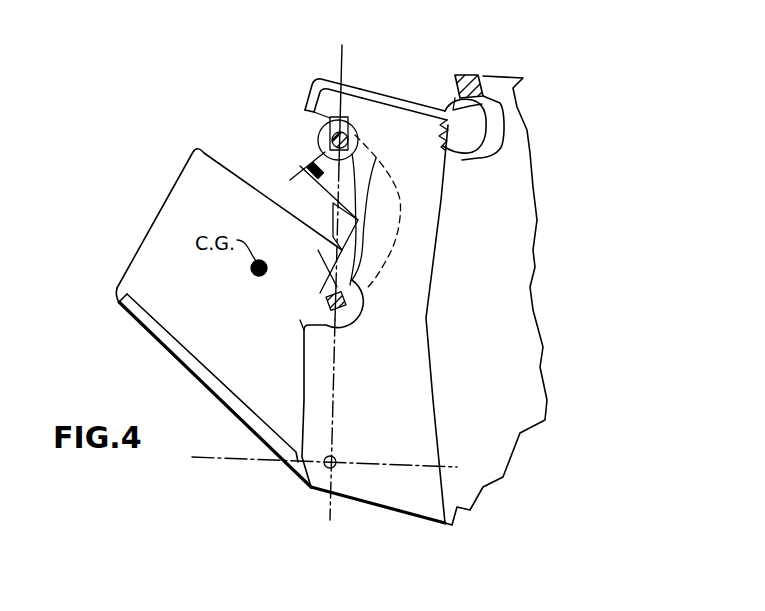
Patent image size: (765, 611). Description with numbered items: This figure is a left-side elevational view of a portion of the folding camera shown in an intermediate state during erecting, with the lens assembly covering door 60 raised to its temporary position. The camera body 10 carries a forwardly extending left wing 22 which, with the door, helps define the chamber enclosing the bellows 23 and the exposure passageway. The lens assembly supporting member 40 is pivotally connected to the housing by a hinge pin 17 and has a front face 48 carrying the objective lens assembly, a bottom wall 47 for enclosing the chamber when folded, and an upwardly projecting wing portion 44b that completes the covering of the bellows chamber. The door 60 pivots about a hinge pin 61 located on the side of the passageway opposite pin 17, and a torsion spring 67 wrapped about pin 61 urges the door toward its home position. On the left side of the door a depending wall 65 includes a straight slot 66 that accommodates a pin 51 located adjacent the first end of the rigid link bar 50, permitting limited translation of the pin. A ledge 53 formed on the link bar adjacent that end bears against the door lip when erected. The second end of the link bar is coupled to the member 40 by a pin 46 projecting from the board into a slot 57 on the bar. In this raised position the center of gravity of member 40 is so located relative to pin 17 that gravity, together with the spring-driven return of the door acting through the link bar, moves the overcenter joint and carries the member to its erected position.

The vehicle body wall 10 is at (507, 60).
The lens assembly covering door 60 is at (306, 72).
The wall 65 is at (415, 112).
The slot 66 is at (323, 130).
The pin 51 is at (330, 138).
The ledge 53 is at (320, 160).
The link bar 50 is at (312, 169).
The bellows 23 is at (311, 208).
The front face 48 is at (143, 237).
The lens assembly supporting member 40 is at (116, 317).
The upwardly projecting wing portion 44b is at (190, 357).
The bottom wall 47 is at (207, 387).
The pin 46 is at (323, 293).
The slot 57 is at (322, 300).
The hinge pin 17 is at (325, 468).
The left wing 22 is at (382, 478).
The hinge pin 61 is at (500, 137).
The torsion spring 67 is at (467, 160).